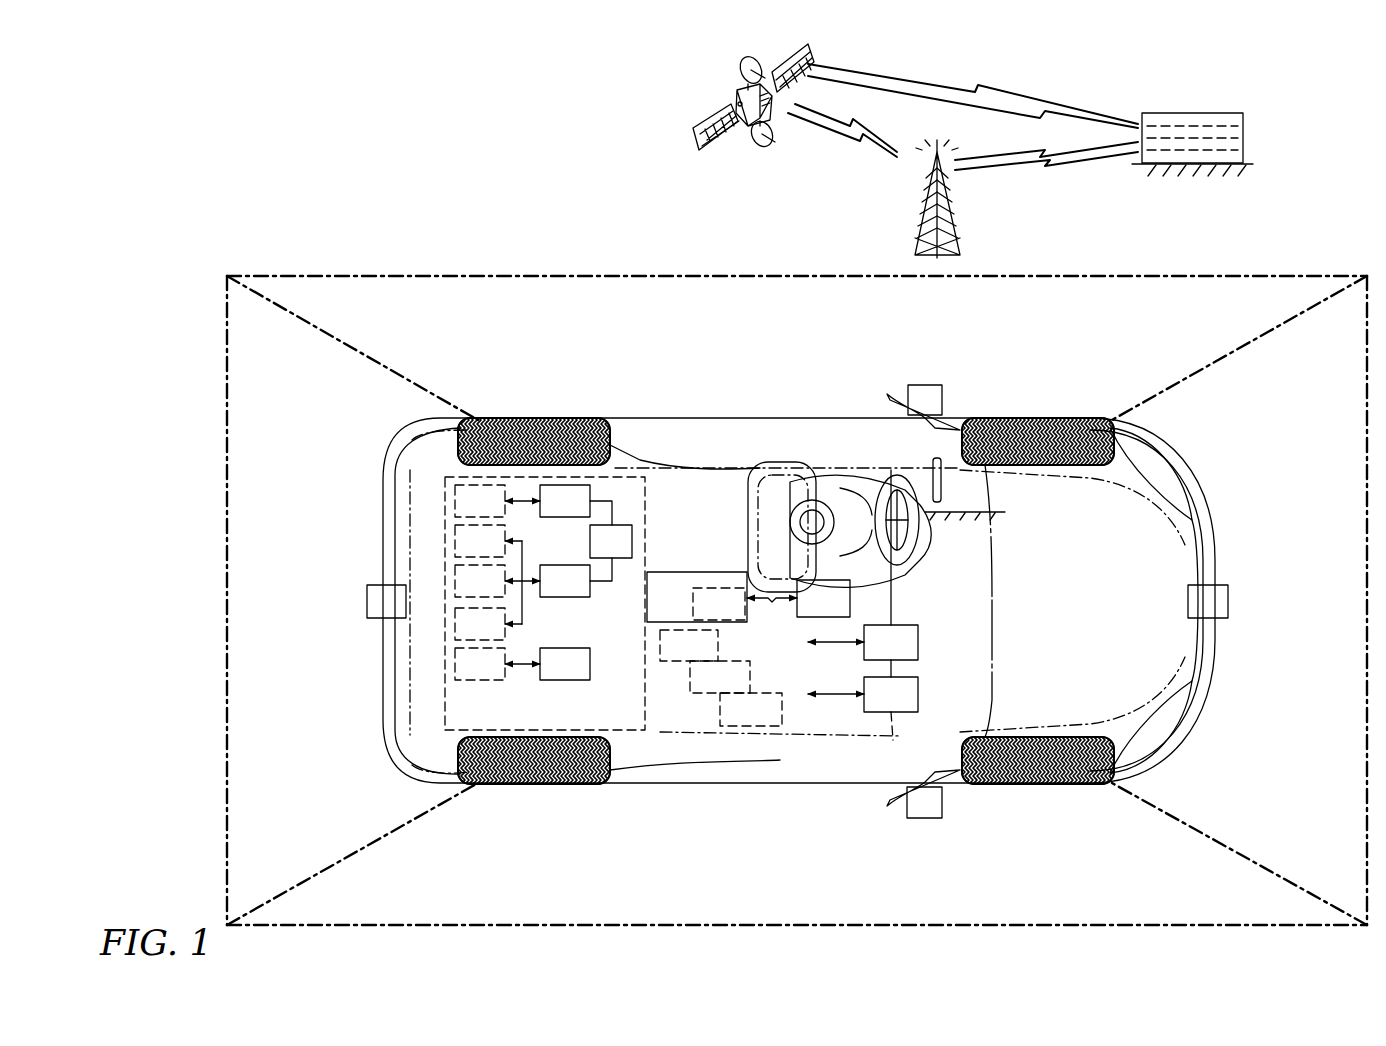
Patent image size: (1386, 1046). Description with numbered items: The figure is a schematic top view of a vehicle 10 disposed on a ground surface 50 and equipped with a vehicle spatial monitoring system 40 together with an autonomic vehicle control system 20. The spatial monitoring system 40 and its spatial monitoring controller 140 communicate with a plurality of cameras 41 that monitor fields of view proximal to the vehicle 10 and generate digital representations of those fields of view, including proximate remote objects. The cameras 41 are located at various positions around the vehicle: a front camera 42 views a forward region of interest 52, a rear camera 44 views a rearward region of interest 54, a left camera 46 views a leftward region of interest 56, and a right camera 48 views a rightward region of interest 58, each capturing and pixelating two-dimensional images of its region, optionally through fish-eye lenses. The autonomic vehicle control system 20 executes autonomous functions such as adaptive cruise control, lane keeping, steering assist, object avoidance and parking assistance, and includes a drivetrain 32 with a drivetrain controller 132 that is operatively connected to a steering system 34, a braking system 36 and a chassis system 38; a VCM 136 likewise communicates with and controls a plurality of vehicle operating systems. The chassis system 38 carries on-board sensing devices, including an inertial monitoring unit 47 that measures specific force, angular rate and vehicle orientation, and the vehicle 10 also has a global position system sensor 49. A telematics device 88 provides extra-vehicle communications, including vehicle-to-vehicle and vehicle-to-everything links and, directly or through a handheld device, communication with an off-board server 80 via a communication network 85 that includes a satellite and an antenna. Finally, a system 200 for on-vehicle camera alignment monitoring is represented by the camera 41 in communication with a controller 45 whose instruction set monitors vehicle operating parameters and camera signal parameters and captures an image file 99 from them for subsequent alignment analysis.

The vehicle 10 is at (1082, 614).
The autonomic vehicle control system 20 is at (597, 554).
The drivetrain 32 is at (465, 514).
The steering system 34 is at (465, 554).
The braking system 36 is at (465, 594).
The chassis system 38 is at (465, 637).
The vehicle spatial monitoring system 40 is at (465, 677).
The camera 41 is at (959, 387).
The front camera 42 is at (1194, 614).
The rear camera 44 is at (373, 614).
The controller 45 is at (654, 601).
The left camera 46 is at (912, 413).
The inertial monitoring unit 47 is at (877, 654).
The right camera 48 is at (912, 816).
The global position system sensor 49 is at (877, 706).
The ground surface 50 is at (825, 960).
The forward region of interest 52 is at (1289, 614).
The rearward region of interest 54 is at (278, 614).
The leftward region of interest 56 is at (797, 270).
The rightward region of interest 58 is at (782, 894).
The off-board server 80 is at (1250, 126).
The communication network 85 is at (817, 184).
The telematics device 88 is at (809, 610).
The image file 99 is at (675, 658).
The drivetrain controller 132 is at (545, 514).
The VCM 136 is at (545, 594).
The spatial monitoring controller 140 is at (545, 677).
The system for on-vehicle camera alignment monitoring 200 is at (740, 617).